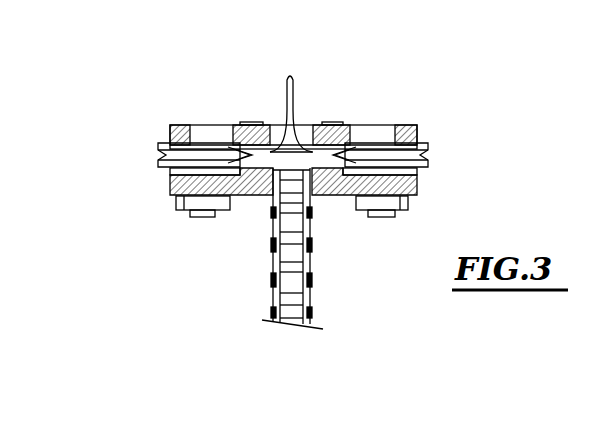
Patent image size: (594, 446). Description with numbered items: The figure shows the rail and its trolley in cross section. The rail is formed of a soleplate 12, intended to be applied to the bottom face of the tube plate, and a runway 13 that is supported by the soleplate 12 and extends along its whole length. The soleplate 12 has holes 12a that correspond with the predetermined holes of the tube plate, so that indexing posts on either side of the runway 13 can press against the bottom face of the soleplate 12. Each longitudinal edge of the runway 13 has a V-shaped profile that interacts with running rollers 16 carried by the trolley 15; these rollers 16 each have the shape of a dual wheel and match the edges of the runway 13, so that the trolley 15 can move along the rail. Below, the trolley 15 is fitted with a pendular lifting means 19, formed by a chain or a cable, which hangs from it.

The soleplate 12 is at (348, 124).
The holes 12a is at (211, 127).
The runway 13 is at (290, 72).
The trolley 15 is at (257, 198).
The running rollers 16 is at (160, 153).
The pendular lifting means 19 is at (308, 267).